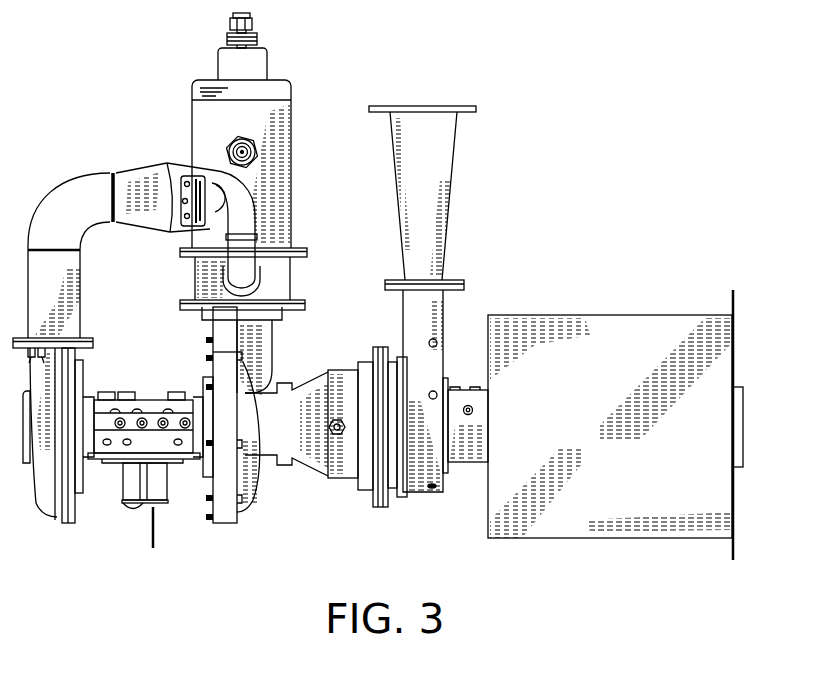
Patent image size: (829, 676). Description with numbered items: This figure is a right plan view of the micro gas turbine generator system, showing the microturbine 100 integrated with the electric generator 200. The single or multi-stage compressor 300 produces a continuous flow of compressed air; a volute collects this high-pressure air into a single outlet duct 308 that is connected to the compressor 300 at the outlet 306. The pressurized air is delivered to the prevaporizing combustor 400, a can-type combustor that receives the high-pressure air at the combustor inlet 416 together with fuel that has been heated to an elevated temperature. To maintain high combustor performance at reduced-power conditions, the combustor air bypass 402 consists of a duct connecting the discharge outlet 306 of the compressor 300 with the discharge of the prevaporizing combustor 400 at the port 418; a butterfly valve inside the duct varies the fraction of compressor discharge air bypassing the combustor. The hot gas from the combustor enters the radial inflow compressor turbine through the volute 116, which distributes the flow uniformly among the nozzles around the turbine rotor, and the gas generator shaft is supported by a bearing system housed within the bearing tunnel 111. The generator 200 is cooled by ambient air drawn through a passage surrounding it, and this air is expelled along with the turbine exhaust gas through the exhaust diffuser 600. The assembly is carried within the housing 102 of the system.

The microturbine 100 is at (98, 116).
The prevaporizing combustor 400 is at (200, 115).
The combustor inlet 416 is at (198, 179).
The outlet 306 is at (188, 181).
The combustor air bypass 402 is at (247, 213).
The outlet duct 308 is at (72, 265).
The port 418 is at (253, 279).
The exhaust diffuser 600 is at (433, 158).
The electric generator 200 is at (613, 332).
The bearing tunnel 111 is at (153, 418).
The compressor 300 is at (43, 493).
The volute 116 is at (253, 497).
The housing 102 is at (312, 455).